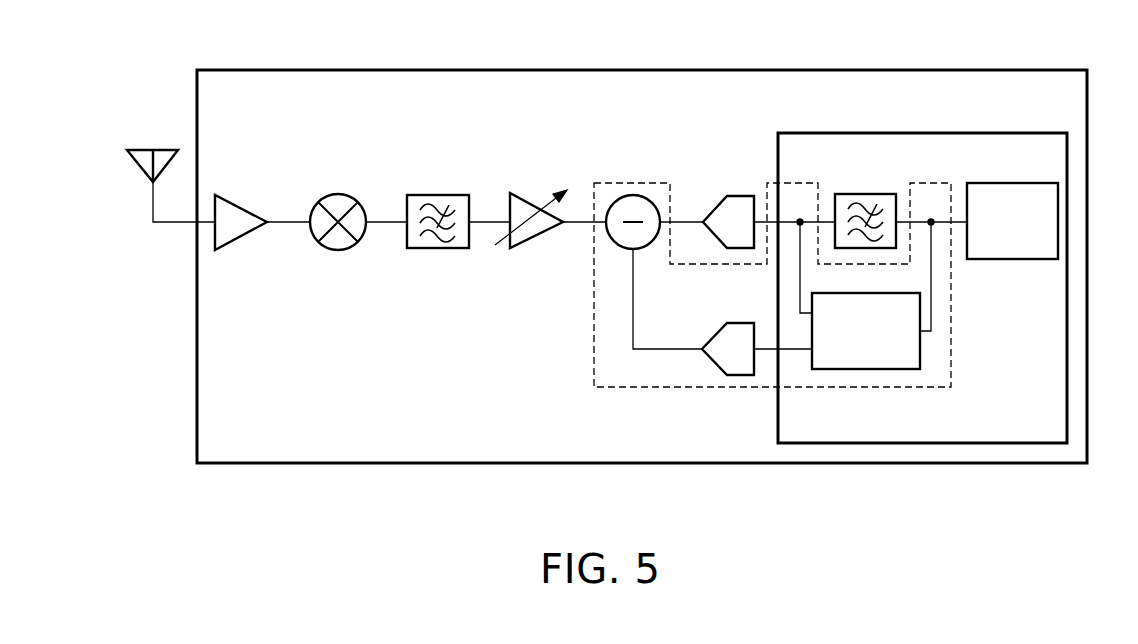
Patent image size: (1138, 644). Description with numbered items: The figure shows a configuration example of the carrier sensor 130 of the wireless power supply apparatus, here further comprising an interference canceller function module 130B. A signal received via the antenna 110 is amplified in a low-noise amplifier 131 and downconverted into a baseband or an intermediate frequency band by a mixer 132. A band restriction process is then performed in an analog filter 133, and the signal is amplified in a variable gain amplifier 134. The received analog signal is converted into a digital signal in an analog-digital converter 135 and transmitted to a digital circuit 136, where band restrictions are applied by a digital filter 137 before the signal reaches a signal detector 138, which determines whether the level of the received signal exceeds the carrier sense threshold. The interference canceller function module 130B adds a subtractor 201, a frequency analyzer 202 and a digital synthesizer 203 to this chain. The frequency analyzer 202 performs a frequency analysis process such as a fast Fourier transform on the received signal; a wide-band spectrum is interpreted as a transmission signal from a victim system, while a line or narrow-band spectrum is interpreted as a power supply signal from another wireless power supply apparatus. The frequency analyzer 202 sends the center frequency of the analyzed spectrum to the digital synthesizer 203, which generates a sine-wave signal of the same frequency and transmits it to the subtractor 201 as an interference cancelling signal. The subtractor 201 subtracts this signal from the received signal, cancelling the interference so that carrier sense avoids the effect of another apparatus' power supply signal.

The antenna 110 is at (144, 150).
The carrier sensor 130 is at (993, 70).
The interference canceller function module 130B is at (668, 388).
The low-noise amplifier 131 is at (240, 203).
The mixer 132 is at (338, 194).
The analog filter 133 is at (440, 195).
The variable gain amplifier 134 is at (527, 200).
The analog-digital converter 135 is at (738, 196).
The digital circuit 136 is at (900, 133).
The digital filter 137 is at (866, 194).
The signal detector 138 is at (985, 183).
The subtractor 201 is at (633, 195).
The frequency analyzer 202 is at (922, 354).
The digital synthesizer 203 is at (737, 323).